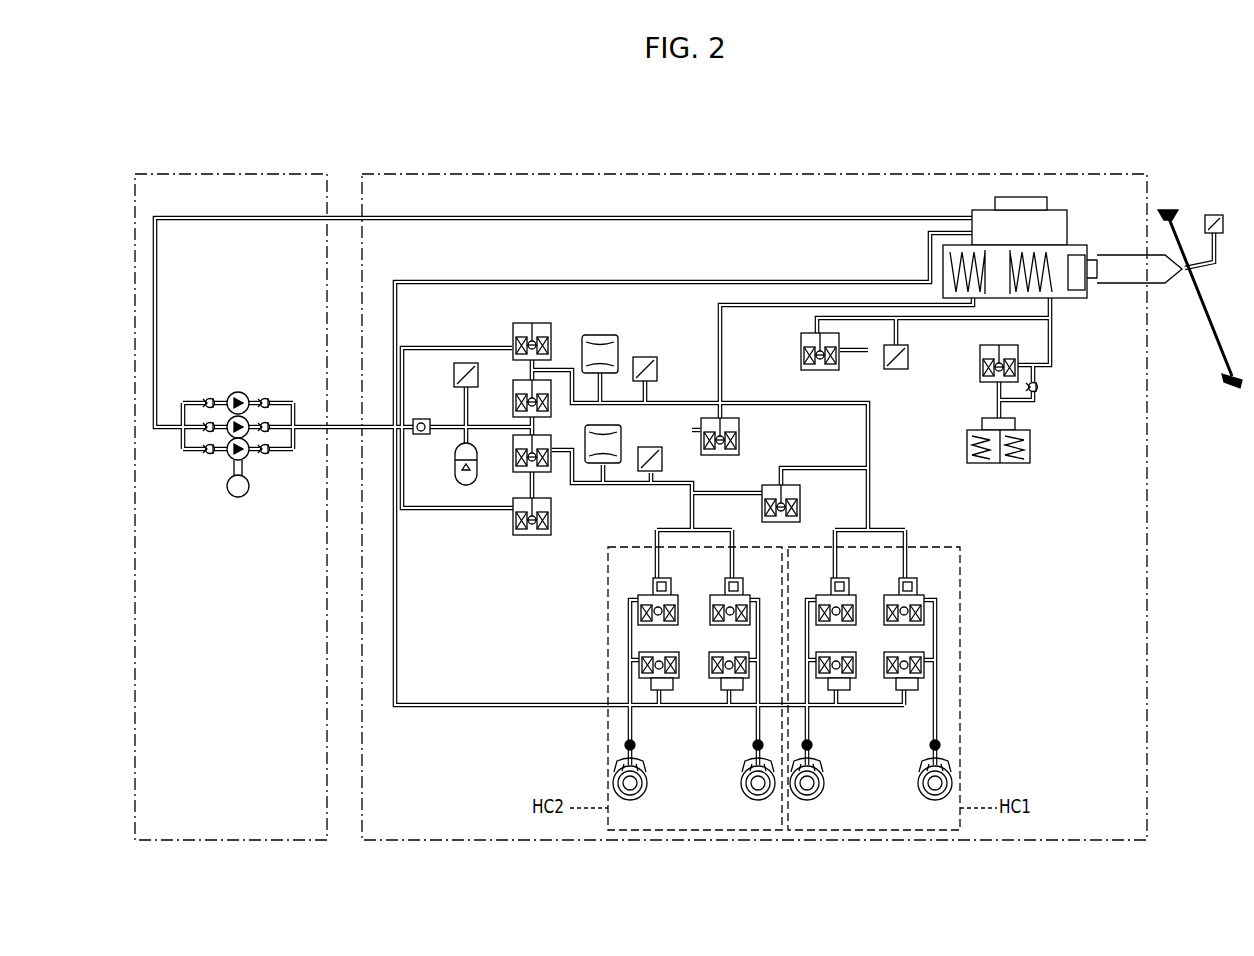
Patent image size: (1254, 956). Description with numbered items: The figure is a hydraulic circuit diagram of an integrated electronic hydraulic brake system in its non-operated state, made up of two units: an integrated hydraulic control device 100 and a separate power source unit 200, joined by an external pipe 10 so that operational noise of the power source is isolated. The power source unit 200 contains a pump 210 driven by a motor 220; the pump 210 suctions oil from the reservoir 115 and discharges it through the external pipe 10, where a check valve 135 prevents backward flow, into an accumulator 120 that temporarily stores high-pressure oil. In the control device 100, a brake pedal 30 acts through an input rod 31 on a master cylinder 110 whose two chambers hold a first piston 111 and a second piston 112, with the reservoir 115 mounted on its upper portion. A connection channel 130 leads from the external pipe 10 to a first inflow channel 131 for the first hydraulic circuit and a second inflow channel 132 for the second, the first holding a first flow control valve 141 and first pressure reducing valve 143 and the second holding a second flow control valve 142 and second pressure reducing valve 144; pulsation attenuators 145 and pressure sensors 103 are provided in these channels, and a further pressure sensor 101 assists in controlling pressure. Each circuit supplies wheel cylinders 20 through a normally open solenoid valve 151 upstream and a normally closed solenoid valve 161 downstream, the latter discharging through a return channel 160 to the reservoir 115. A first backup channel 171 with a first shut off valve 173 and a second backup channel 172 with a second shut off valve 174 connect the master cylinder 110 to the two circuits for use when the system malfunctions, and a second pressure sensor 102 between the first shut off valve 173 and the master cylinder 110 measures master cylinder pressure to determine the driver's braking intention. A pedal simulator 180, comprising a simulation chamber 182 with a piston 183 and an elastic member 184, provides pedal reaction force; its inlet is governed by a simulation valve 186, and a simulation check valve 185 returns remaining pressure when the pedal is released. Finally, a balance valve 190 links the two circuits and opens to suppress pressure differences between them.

The external pipe 10 is at (343, 430).
The wheel cylinders 20 is at (742, 770).
The brake pedal 30 is at (1226, 380).
The input rod 31 is at (1160, 290).
The integrated hydraulic control device 100 is at (562, 174).
The pressure sensor 101 is at (454, 366).
The second pressure sensor 102 is at (897, 369).
The pressure sensors 103 is at (652, 357).
The master cylinder 110 is at (1055, 265).
The first piston 111 is at (1082, 262).
The second piston 112 is at (1000, 250).
The reservoir 115 is at (1040, 197).
The accumulator 120 is at (462, 485).
The connection channel 130 is at (420, 436).
The first inflow channel 131 is at (685, 403).
The second inflow channel 132 is at (618, 488).
The check valve 135 is at (418, 417).
The first flow control valve 141 is at (513, 393).
The second flow control valve 142 is at (512, 460).
The first pressure reducing valve 143 is at (524, 323).
The second pressure reducing valve 144 is at (530, 538).
The pulsation attenuators 145 is at (606, 425).
The NO type solenoid valve 151 is at (640, 595).
The return channel 160 is at (512, 705).
The NC type solenoid valve 161 is at (735, 690).
The first backup channel 171 is at (972, 318).
The second backup channel 172 is at (760, 304).
The first shut off valve 173 is at (801, 352).
The second shut off valve 174 is at (740, 435).
The pedal simulator 180 is at (1028, 472).
The simulation chamber 182 is at (1030, 456).
The piston 183 is at (1030, 436).
The elastic member 184 is at (1025, 465).
The simulation check valve 185 is at (1040, 390).
The simulation valve 186 is at (980, 368).
The balance valve 190 is at (800, 505).
The power source unit 200 is at (245, 174).
The pump 210 is at (235, 392).
The motor 220 is at (234, 498).